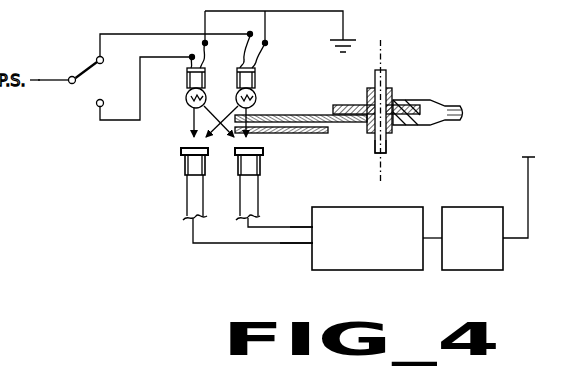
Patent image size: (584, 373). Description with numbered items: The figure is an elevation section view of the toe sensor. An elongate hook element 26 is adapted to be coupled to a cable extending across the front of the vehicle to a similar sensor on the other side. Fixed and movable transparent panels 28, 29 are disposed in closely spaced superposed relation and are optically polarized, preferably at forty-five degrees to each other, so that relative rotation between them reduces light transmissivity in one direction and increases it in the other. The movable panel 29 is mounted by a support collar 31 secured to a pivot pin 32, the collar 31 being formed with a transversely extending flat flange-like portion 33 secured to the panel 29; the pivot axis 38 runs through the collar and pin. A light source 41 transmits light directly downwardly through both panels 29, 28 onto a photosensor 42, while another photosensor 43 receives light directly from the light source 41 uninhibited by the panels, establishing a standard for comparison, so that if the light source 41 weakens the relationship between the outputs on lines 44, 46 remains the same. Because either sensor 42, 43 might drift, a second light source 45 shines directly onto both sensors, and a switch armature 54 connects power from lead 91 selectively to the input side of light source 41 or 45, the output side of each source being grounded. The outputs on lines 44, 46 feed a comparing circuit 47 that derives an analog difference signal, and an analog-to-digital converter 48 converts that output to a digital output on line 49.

The elongate hook element 26 is at (447, 102).
The fixed transparent panel 28 is at (307, 133).
The movable transparent panel 29 is at (319, 115).
The support collar 31 is at (395, 90).
The pivot pin 32 is at (386, 150).
The flange-like portion 33 is at (353, 105).
The axis of rotation 38 is at (384, 57).
The light source 41 is at (258, 91).
The photosensor 42 is at (257, 162).
The photosensor 43 is at (186, 165).
The output line 44 is at (297, 207).
The second light source 45 is at (185, 103).
The output line 46 is at (262, 245).
The comparing circuit 47 is at (388, 207).
The analog-to-digital converter 48 is at (462, 207).
The digital output line 49 is at (524, 170).
The switch armature 54 is at (84, 73).
The power lead 91 is at (38, 82).